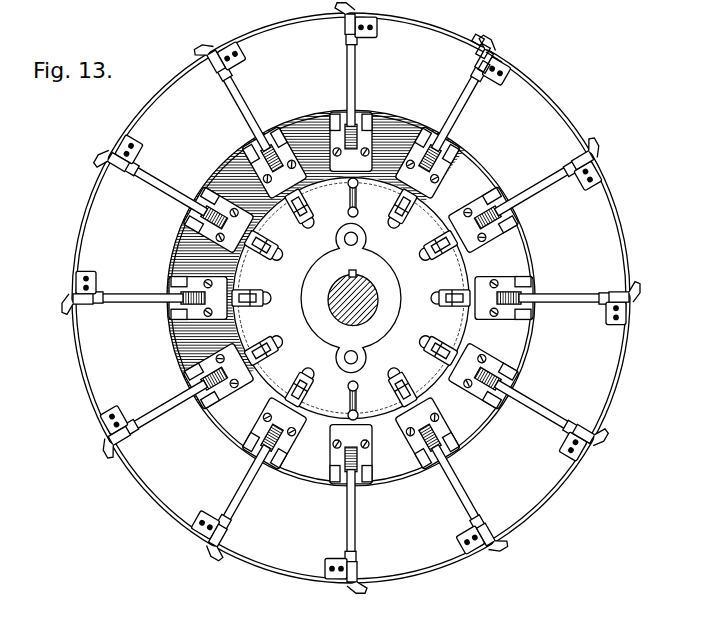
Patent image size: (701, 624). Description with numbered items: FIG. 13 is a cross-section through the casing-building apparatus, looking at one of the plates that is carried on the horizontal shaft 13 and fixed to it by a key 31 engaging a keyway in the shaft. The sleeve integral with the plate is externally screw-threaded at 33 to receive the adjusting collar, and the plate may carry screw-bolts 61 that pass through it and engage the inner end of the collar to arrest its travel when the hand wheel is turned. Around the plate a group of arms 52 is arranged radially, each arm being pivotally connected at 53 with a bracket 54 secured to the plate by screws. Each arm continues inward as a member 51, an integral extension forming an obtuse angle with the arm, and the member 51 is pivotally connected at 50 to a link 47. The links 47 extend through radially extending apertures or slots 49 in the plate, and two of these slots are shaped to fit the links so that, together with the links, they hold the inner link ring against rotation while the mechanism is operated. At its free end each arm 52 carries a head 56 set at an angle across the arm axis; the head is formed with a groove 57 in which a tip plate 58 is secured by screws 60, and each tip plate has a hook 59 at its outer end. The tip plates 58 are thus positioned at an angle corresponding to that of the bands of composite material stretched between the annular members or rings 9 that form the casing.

The annular members or rings 9 is at (530, 73).
The shaft 13 is at (377, 293).
The key 31 is at (362, 270).
The external screw-threads 33 is at (447, 160).
The links 47 is at (350, 194).
The apertures or slots 49 is at (345, 238).
The pivotal connection 50 is at (430, 240).
The members 51 is at (450, 230).
The arms 52 is at (244, 102).
The pivotal connection 53 is at (380, 116).
The brackets 54 is at (367, 115).
The heads 56 is at (500, 93).
The grooves 57 is at (483, 68).
The tip plates 58 is at (484, 52).
The hooks 59 is at (478, 40).
The screws 60 is at (497, 58).
The screw-bolts 61 is at (349, 251).